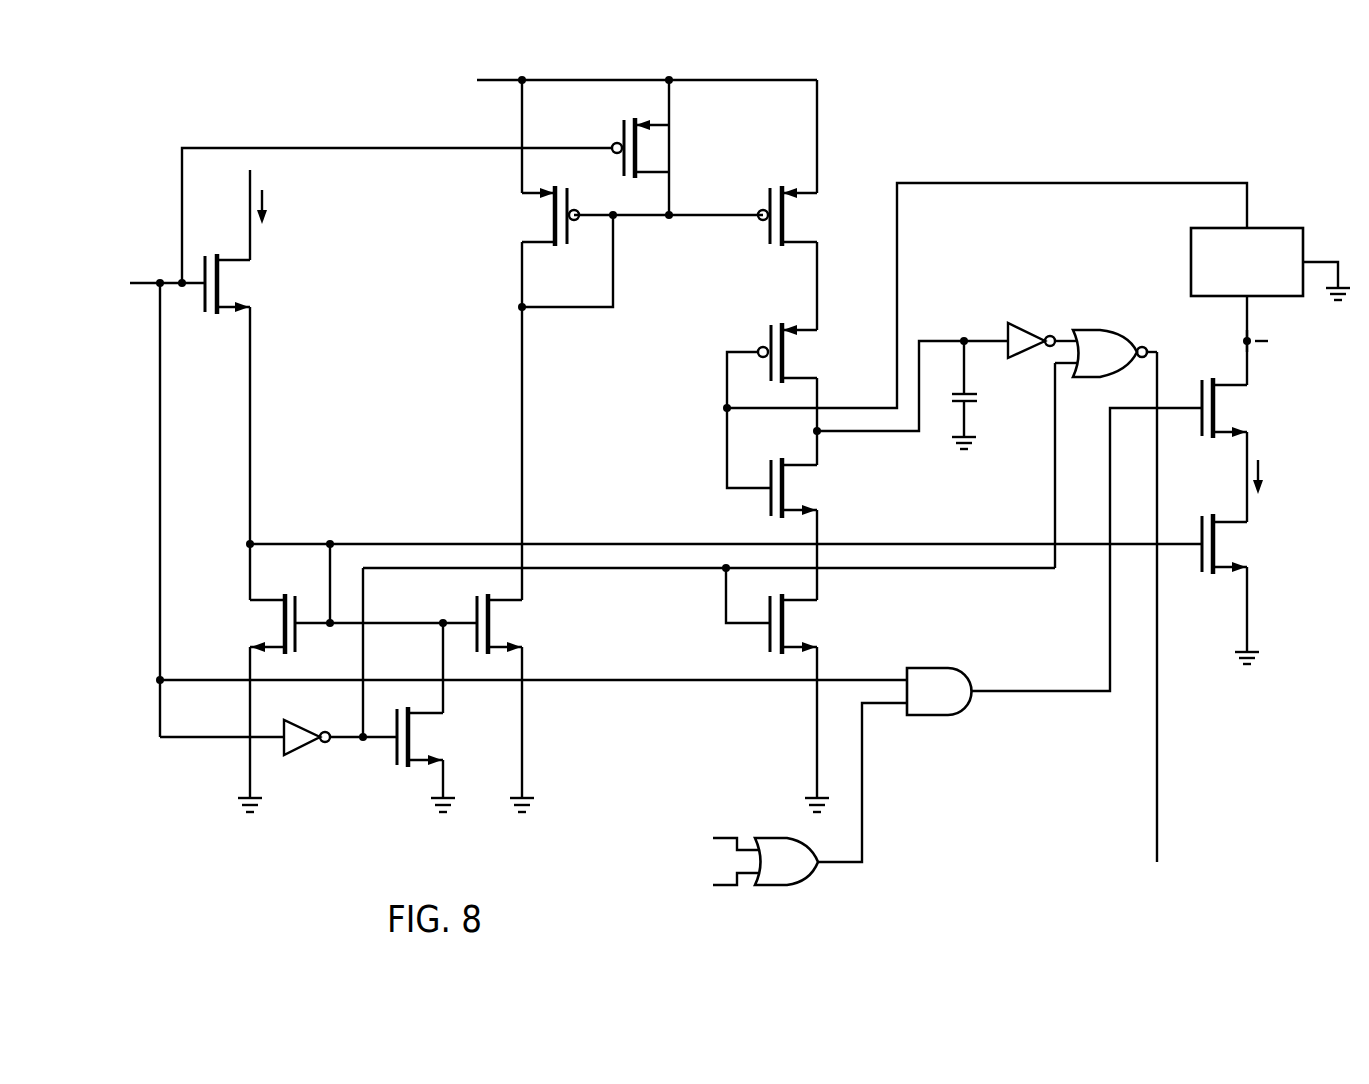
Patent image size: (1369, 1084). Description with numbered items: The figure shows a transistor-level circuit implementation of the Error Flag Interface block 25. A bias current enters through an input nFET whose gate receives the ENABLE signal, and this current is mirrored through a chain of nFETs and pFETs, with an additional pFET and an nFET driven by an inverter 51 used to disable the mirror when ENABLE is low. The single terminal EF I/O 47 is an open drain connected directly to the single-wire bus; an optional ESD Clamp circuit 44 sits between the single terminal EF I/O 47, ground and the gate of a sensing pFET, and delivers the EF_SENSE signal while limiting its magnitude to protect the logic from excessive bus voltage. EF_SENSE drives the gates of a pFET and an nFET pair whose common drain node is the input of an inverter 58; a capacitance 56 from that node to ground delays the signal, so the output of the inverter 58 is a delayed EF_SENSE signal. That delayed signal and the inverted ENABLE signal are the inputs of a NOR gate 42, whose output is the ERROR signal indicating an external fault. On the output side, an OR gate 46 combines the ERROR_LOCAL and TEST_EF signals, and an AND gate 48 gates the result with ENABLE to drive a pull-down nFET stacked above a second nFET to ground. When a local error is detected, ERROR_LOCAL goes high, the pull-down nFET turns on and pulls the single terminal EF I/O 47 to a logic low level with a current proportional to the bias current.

The Error Flag Interface block 25 is at (1233, 83).
The NOR gate 42 is at (1100, 330).
The ESD Clamp circuit 44 is at (1282, 227).
The OR gate 46 is at (782, 887).
The single terminal EF I/O 47 is at (1252, 346).
The AND gate 48 is at (930, 717).
The inverter 51 is at (303, 747).
The capacitance 56 is at (978, 399).
The inverter 58 is at (1030, 324).